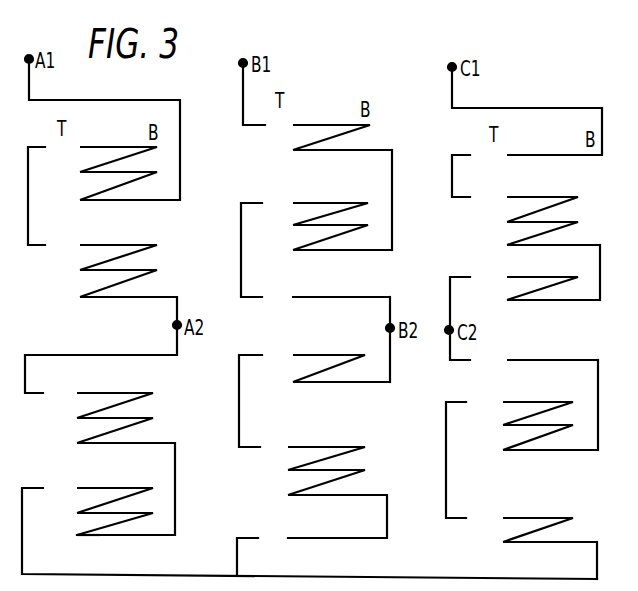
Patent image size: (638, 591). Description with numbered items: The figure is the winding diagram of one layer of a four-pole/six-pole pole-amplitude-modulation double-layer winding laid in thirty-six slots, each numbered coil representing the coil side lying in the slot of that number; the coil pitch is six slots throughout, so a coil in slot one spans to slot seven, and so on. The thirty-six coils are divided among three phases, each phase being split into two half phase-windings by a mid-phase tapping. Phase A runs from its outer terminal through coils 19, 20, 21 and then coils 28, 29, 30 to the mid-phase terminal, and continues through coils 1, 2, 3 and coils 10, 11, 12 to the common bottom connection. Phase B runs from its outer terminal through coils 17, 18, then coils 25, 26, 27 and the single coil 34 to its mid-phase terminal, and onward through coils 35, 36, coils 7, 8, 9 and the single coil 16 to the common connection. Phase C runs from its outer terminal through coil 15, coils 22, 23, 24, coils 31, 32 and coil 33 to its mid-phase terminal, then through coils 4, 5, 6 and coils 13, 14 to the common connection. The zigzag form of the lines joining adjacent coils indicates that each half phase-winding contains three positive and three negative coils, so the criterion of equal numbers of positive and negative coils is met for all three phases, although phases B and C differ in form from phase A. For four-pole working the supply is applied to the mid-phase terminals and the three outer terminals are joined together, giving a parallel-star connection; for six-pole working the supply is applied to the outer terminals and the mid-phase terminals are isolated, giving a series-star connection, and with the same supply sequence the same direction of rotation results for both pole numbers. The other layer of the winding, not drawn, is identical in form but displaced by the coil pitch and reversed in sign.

The coil 1 is at (104, 397).
The coil 2 is at (104, 422).
The coil 3 is at (115, 443).
The coil 4 is at (527, 405).
The coil 5 is at (527, 429).
The coil 6 is at (540, 450).
The coil 7 is at (317, 450).
The coil 8 is at (317, 474).
The coil 9 is at (328, 495).
The coil 10 is at (102, 492).
The coil 11 is at (102, 516).
The coil 12 is at (76, 535).
The coil 13 is at (526, 522).
The coil 14 is at (538, 542).
The coil 15 is at (541, 155).
The coil 16 is at (324, 538).
The coil 17 is at (320, 129).
The coil 18 is at (331, 150).
The coil 19 is at (105, 151).
The coil 20 is at (105, 178).
The coil 21 is at (117, 200).
The coil 22 is at (529, 201).
The coil 23 is at (529, 225).
The coil 24 is at (540, 245).
The coil 25 is at (319, 206).
The coil 26 is at (319, 229).
The coil 27 is at (331, 250).
The coil 28 is at (105, 249).
The coil 29 is at (105, 275).
The coil 30 is at (115, 297).
The coil 31 is at (529, 280).
The coil 32 is at (540, 300).
The coil 33 is at (539, 360).
The coil 34 is at (330, 297).
The coil 35 is at (317, 360).
The coil 36 is at (330, 382).